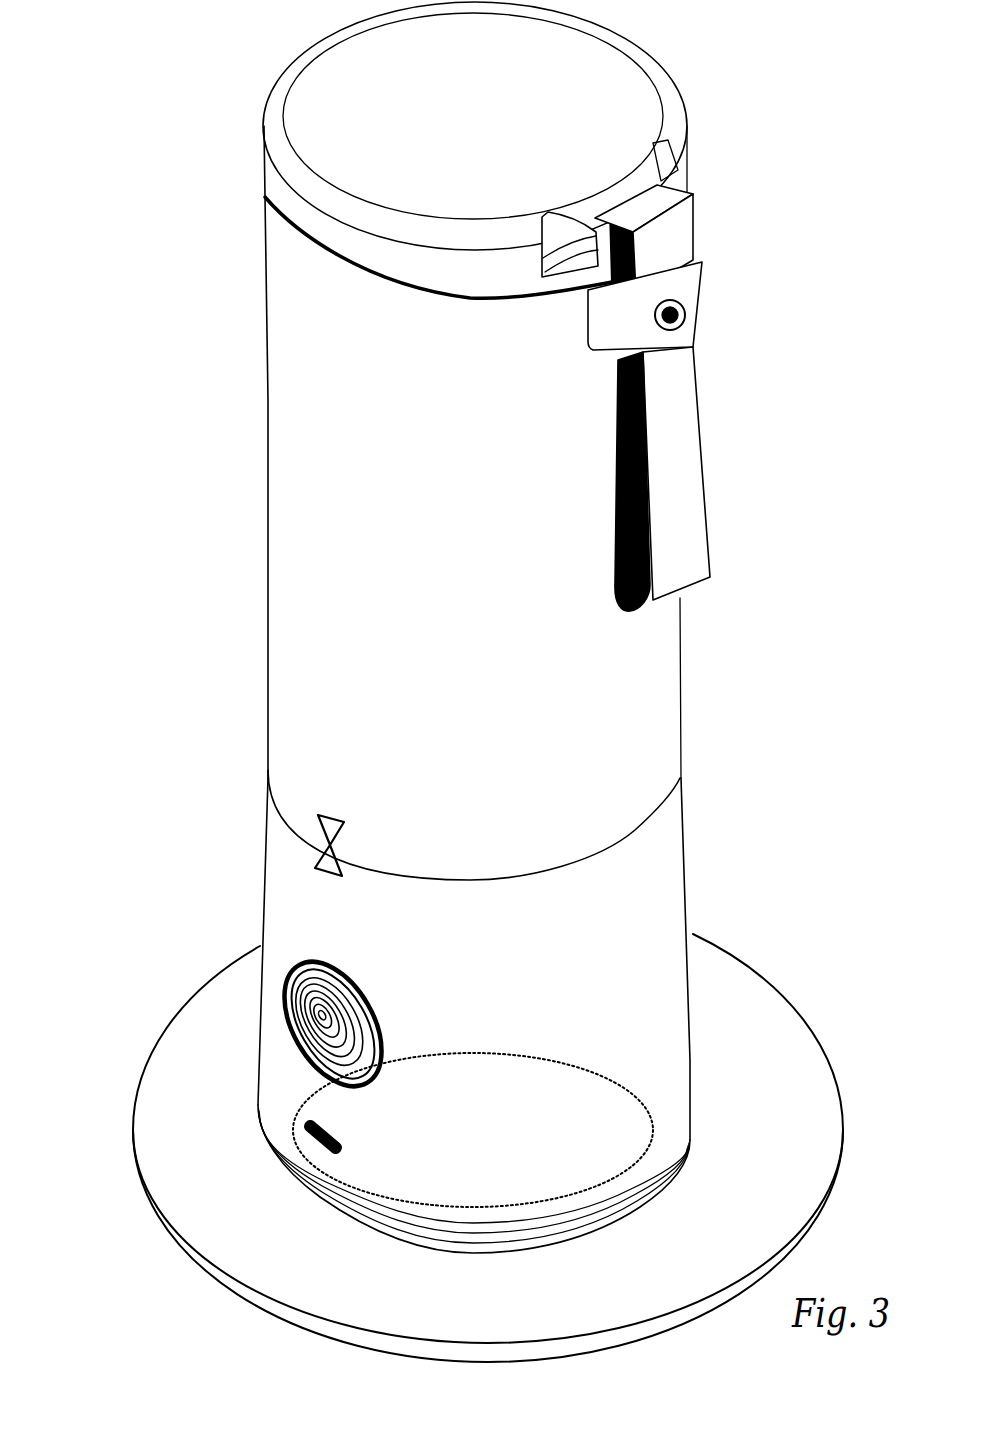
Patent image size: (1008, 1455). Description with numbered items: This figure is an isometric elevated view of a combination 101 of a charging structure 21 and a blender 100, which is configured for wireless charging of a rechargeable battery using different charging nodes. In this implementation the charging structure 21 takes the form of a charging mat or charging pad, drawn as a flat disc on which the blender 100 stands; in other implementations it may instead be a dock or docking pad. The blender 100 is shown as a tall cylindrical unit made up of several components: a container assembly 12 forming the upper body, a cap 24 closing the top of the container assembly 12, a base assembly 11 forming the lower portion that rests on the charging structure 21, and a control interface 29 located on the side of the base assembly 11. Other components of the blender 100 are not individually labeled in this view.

The blender 100 is at (819, 50).
The combination 101 is at (203, 830).
The container assembly 12 is at (706, 720).
The cap 24 is at (475, 150).
The base assembly 11 is at (696, 912).
The control interface 29 is at (294, 1052).
The charging structure 21 is at (175, 1171).